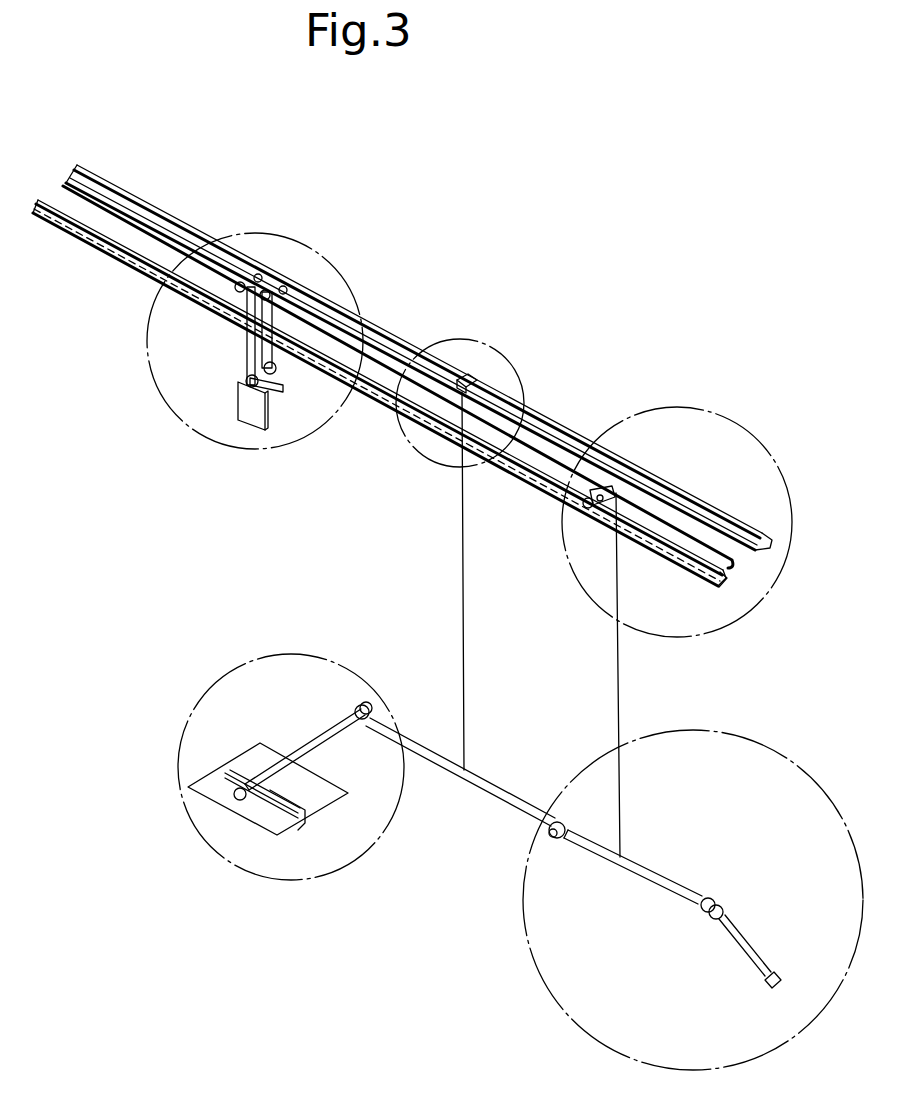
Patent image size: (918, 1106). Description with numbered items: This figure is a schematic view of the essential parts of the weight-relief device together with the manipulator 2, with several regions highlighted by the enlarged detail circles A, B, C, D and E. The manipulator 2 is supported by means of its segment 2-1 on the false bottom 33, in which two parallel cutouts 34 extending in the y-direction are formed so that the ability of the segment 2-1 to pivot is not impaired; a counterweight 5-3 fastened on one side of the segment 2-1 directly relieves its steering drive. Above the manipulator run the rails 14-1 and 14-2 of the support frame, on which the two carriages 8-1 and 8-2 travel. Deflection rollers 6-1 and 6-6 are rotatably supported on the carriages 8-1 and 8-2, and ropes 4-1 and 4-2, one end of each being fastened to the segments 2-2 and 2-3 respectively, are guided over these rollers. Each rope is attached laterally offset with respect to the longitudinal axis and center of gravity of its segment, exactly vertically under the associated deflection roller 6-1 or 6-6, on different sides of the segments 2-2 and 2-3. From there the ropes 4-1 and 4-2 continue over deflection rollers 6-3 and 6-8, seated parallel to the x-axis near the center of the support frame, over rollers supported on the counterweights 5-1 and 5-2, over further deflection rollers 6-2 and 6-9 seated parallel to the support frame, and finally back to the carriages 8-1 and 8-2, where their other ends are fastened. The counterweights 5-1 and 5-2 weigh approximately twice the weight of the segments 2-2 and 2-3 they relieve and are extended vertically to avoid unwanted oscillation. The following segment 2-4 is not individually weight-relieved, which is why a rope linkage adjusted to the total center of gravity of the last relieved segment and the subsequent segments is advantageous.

The manipulator 2 is at (490, 818).
The segment 2-1 is at (312, 745).
The segment 2-2 is at (505, 798).
The segment 2-3 is at (645, 868).
The segment 2-4 is at (760, 950).
The rope 4-1 is at (465, 665).
The rope 4-2 is at (618, 690).
The counterweight 5-1 is at (285, 390).
The counterweight 5-2 is at (245, 414).
The counterweight 5-3 is at (240, 797).
The deflection roller 6-1 is at (460, 393).
The deflection roller 6-2 is at (287, 287).
The deflection roller 6-3 is at (257, 274).
The deflection roller 6-6 is at (607, 488).
The deflection roller 6-8 is at (235, 287).
The deflection roller 6-9 is at (250, 305).
The carriage 8-1 is at (478, 379).
The carriage 8-2 is at (590, 505).
The rail 14-1 is at (772, 548).
The rail 14-2 is at (722, 583).
The false bottom 33 is at (320, 790).
The cutout 34 is at (301, 820).
The detail circle A is at (147, 407).
The detail circle B is at (425, 462).
The detail circle C is at (588, 603).
The detail circle D is at (178, 800).
The detail circle E is at (525, 963).